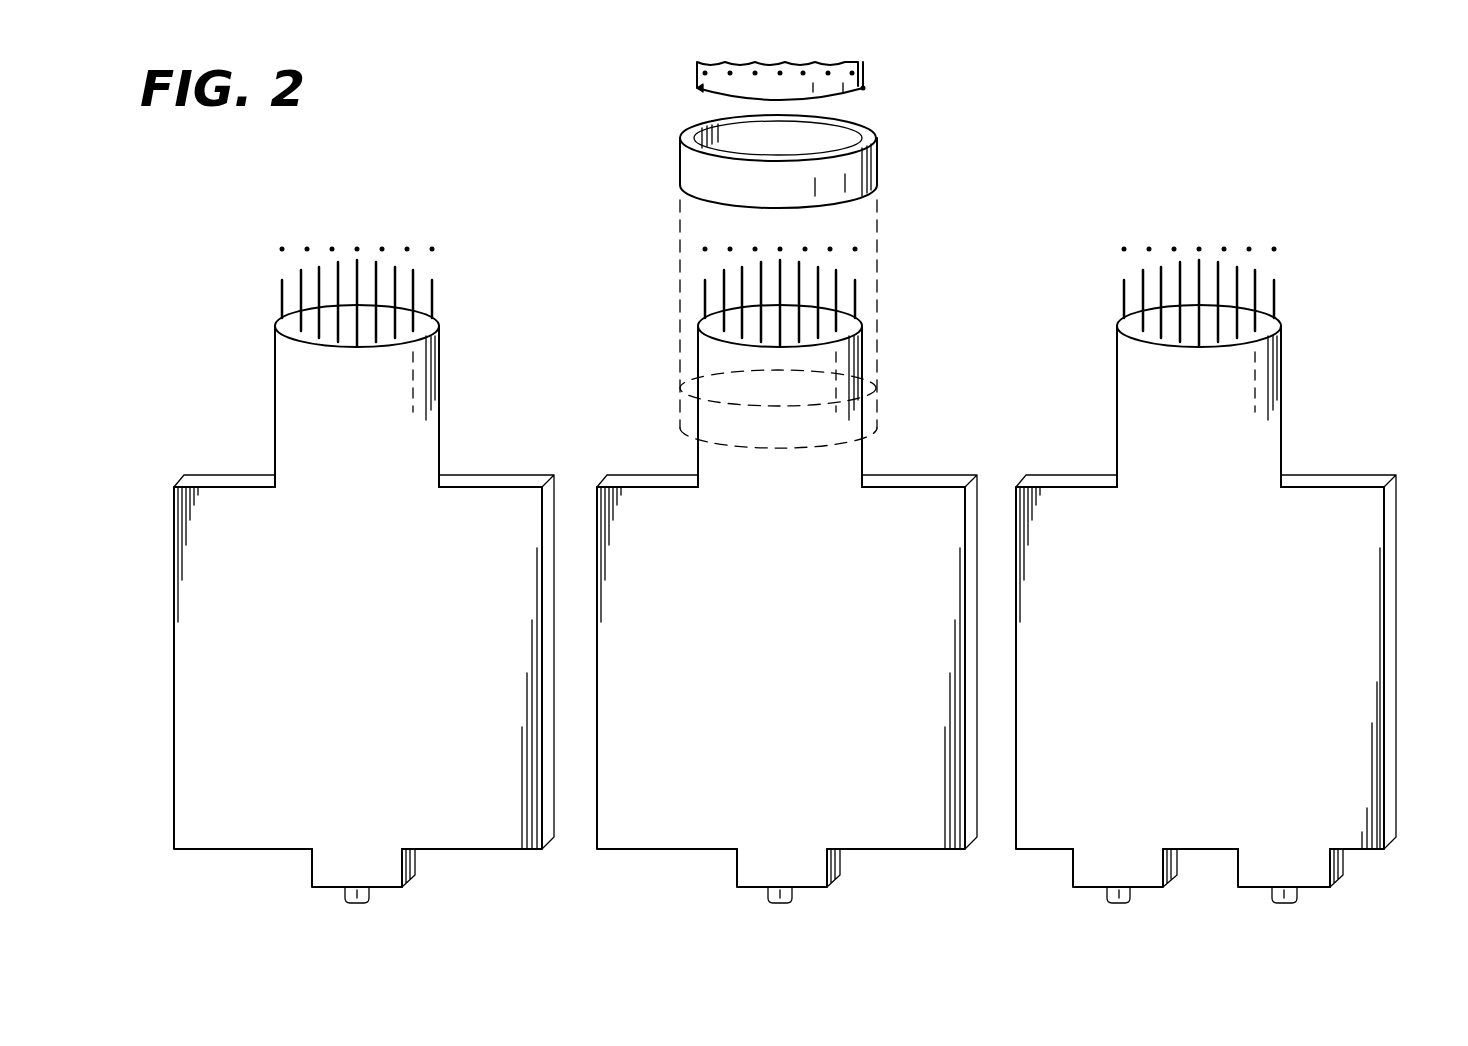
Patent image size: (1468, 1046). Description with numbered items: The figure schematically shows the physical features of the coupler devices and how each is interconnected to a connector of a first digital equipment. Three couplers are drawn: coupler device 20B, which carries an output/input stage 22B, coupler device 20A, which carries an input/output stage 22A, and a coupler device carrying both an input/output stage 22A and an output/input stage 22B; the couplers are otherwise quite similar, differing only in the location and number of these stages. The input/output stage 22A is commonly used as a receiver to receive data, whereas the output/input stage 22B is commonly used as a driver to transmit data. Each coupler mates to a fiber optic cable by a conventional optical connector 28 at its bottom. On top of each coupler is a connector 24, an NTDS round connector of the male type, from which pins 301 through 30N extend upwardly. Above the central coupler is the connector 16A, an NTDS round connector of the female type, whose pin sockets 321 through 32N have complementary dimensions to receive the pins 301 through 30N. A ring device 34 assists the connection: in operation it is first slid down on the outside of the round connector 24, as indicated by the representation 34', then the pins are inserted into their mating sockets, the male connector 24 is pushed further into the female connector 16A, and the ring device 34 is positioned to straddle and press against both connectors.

The connector 16A is at (700, 96).
The pin socket 321 is at (697, 88).
The pin socket 32N is at (865, 88).
The ring device 34 is at (820, 161).
The ring device representation 34' is at (819, 324).
The connector 24 is at (275, 405).
The pin 301 is at (280, 296).
The pin 30N is at (434, 296).
The coupler device 20B is at (487, 478).
The coupler device 20A is at (792, 625).
The output/input stage 22B is at (392, 857).
The input/output stage 22A is at (1049, 829).
The optical connector 28 is at (821, 894).